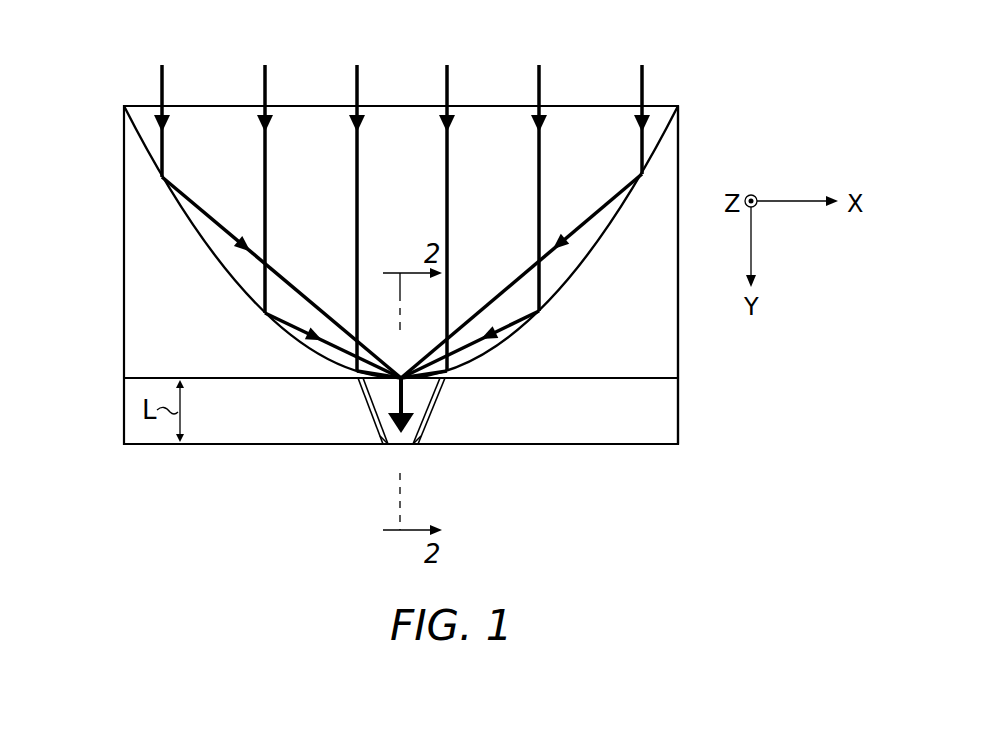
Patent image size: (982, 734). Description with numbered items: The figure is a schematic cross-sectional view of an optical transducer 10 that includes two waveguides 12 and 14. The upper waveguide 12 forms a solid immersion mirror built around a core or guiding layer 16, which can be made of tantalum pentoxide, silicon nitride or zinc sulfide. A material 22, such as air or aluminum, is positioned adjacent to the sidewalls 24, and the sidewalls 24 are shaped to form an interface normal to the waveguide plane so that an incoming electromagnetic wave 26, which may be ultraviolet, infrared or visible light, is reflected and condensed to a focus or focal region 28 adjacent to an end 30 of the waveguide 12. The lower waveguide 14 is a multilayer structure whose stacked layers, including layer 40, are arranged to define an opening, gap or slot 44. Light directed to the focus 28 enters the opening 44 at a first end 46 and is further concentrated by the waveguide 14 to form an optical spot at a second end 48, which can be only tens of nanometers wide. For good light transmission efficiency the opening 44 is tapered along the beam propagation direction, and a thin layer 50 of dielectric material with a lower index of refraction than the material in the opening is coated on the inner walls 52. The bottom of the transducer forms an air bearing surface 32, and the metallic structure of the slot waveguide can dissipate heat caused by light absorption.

The optical transducer 10 is at (117, 72).
The waveguide 12 is at (110, 107).
The waveguide 14 is at (110, 380).
The core or guiding layer 16 is at (590, 120).
The material 22 is at (663, 352).
The sidewalls 24 is at (567, 284).
The electromagnetic wave 26 is at (447, 85).
The focus or focal region 28 is at (396, 376).
The end of the waveguide 30 is at (380, 382).
The air bearing surface 32 is at (263, 445).
The layer 40 is at (561, 433).
The opening, gap or slot 44 is at (393, 446).
The first end of the opening 46 is at (424, 384).
The second end of the opening 48 is at (406, 446).
The thin layer of dielectric material 50 is at (432, 412).
The inner walls 52 is at (373, 418).